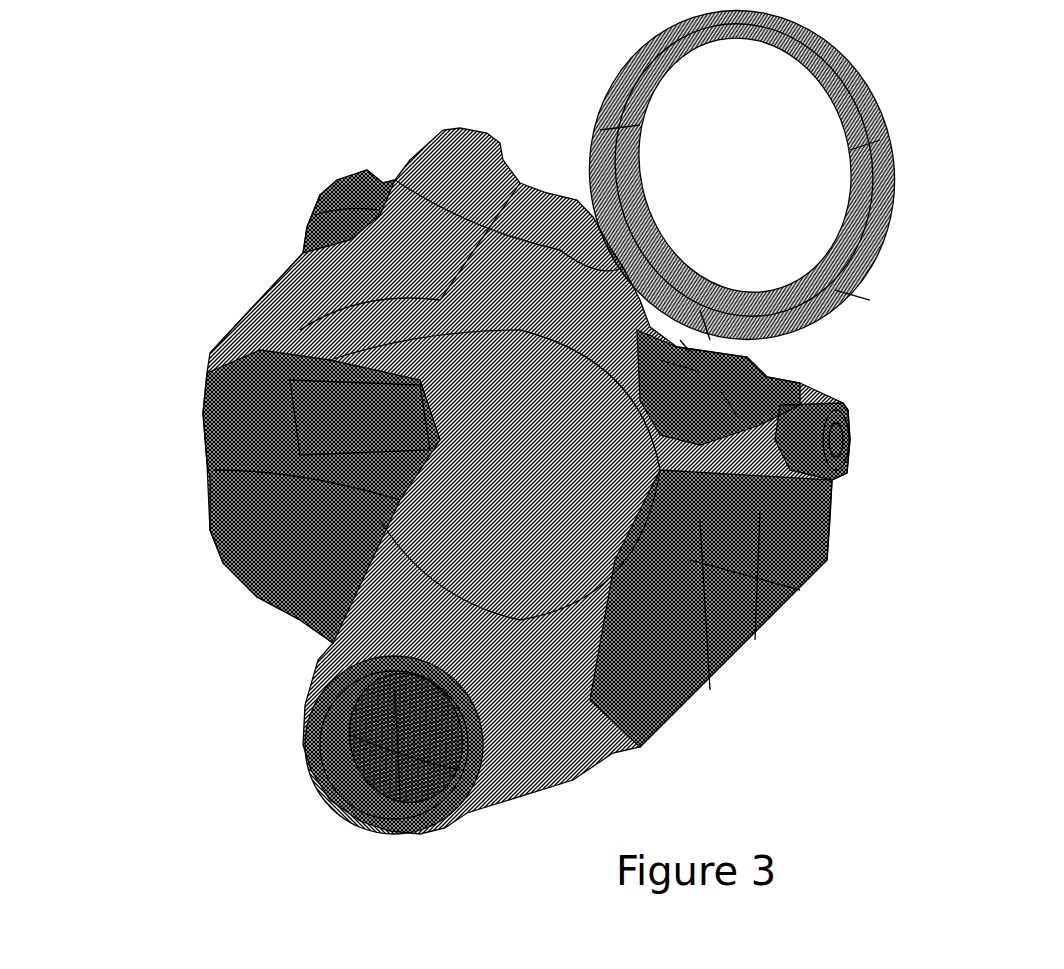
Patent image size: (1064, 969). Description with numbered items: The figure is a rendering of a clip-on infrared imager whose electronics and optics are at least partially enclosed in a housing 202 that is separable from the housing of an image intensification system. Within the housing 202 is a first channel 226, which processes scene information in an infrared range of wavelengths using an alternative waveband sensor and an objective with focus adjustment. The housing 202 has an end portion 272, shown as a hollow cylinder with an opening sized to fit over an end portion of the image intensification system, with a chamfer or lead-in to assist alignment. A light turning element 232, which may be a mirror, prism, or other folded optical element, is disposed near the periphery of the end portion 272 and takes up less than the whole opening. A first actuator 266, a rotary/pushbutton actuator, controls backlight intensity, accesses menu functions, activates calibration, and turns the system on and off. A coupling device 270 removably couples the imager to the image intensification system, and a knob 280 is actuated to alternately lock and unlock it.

The housing 202 is at (743, 647).
The first channel 226 is at (338, 797).
The light turning element 232 is at (222, 556).
The first actuator 266 is at (337, 187).
The coupling device 270 is at (890, 120).
The end portion 272 is at (667, 453).
The knob 280 is at (843, 403).